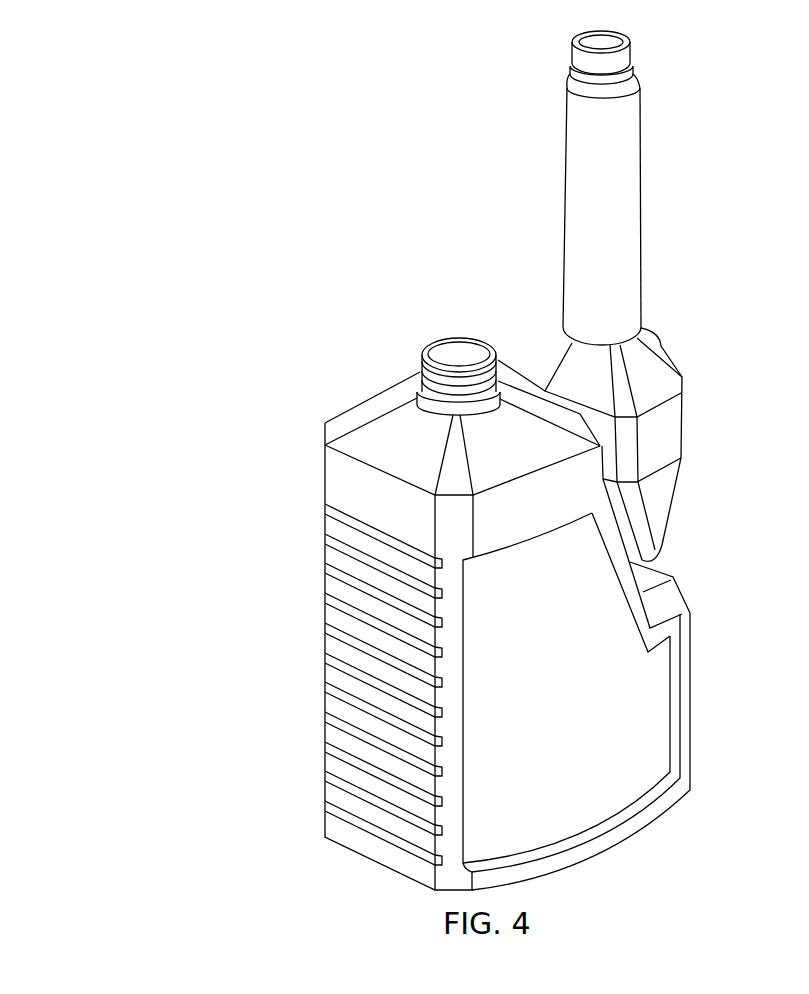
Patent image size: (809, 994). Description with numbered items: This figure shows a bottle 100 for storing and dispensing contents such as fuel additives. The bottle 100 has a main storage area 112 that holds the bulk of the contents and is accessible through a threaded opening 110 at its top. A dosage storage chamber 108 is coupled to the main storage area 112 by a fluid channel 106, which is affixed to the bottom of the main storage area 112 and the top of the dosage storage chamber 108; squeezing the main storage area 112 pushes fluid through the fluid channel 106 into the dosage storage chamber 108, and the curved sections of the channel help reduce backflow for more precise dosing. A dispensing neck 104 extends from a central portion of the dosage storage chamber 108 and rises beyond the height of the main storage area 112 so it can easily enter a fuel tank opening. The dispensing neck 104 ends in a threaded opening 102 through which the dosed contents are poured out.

The bottle 100 is at (107, 68).
The opening 102 is at (636, 43).
The dispensing neck 104 is at (638, 223).
The fluid channel 106 is at (659, 332).
The dosage storage chamber 108 is at (517, 353).
The opening 110 is at (444, 327).
The main storage area 112 is at (321, 693).